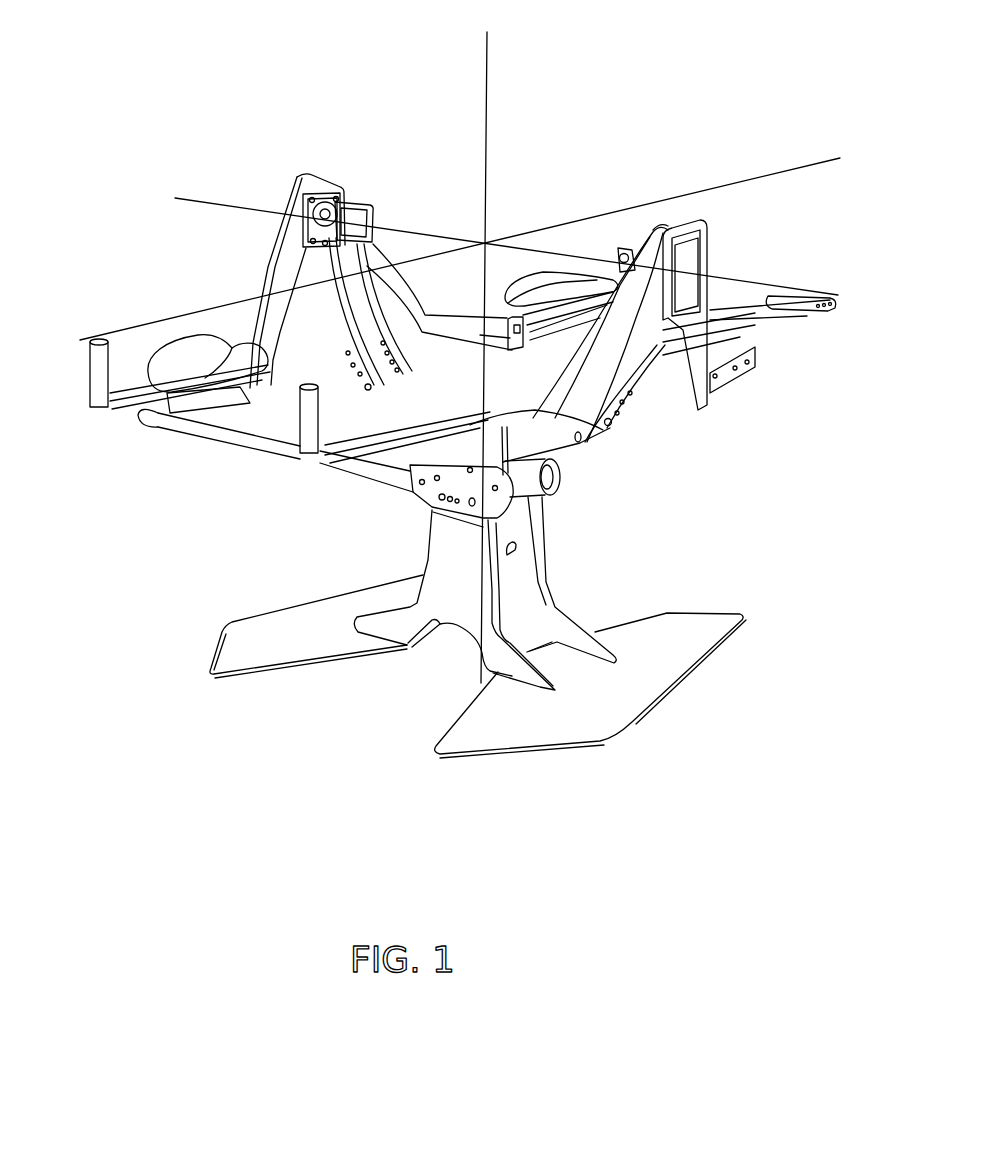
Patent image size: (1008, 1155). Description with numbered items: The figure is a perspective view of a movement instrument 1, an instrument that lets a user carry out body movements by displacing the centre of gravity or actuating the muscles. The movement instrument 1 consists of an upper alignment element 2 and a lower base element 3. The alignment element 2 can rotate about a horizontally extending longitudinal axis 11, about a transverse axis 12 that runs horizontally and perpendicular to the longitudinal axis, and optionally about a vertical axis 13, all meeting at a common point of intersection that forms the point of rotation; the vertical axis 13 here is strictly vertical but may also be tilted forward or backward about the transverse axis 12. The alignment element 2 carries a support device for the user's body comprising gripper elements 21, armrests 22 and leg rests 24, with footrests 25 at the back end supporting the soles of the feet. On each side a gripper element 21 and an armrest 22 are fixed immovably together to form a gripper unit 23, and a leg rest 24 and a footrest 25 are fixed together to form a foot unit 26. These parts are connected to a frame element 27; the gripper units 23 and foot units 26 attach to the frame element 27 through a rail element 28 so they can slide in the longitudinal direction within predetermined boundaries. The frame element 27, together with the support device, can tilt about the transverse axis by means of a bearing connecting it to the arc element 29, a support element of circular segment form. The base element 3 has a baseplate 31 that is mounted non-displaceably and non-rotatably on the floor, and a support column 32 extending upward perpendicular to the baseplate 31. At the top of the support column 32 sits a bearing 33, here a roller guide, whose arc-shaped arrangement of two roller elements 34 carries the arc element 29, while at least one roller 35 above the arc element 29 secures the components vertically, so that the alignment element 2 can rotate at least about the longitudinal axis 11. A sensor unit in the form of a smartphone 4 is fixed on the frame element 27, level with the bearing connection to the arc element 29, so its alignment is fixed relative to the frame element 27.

The movement instrument 1 is at (175, 75).
The alignment element 2 is at (355, 143).
The base element 3 is at (347, 700).
The smartphone 4 is at (747, 325).
The longitudinal axis 11 is at (173, 320).
The transverse axis 12 is at (178, 196).
The vertical axis 13 is at (484, 156).
The gripper element 21 is at (97, 410).
The armrest 22 is at (157, 414).
The gripper unit 23 is at (251, 455).
The leg rest 24 is at (560, 277).
The footrest 25 is at (763, 297).
The foot unit 26 is at (744, 257).
The frame element 27 is at (597, 380).
The rail element 28 is at (205, 400).
The arc element 29 is at (367, 262).
The baseplate 31 is at (570, 703).
The support column 32 is at (458, 592).
The bearing 33 is at (527, 503).
The roller elements 34 is at (545, 477).
The roller 35 is at (598, 426).